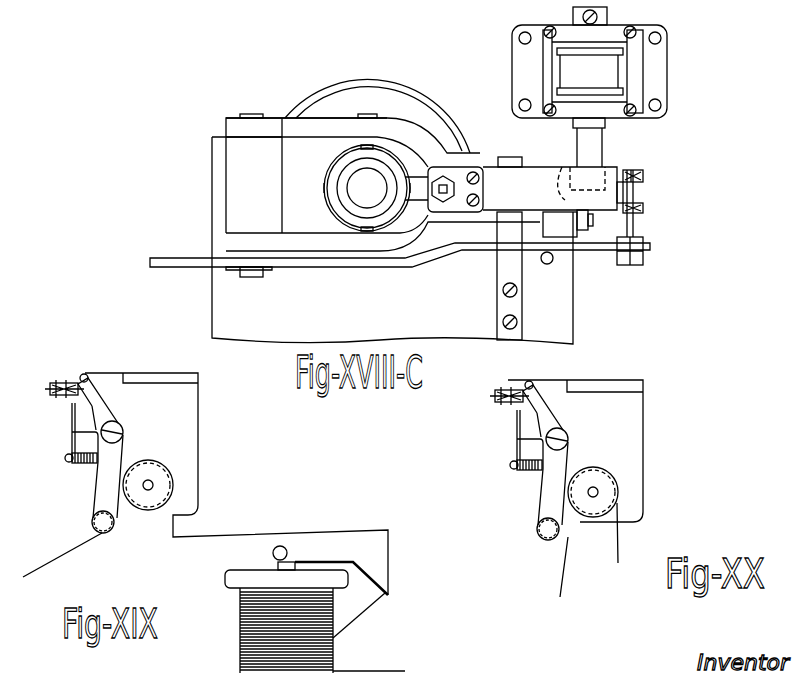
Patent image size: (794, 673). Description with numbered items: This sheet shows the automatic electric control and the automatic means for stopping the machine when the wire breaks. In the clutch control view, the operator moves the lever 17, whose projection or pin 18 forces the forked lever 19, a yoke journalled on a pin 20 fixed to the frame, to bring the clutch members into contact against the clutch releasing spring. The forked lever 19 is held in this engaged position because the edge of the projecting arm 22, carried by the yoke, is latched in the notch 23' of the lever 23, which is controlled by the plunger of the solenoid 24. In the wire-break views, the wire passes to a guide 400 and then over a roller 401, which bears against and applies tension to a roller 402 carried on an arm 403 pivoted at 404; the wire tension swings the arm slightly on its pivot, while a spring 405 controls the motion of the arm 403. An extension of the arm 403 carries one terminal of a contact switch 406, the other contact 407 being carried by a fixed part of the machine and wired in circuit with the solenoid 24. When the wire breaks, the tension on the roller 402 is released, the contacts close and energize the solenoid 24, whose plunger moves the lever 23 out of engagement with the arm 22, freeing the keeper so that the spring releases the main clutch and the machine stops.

In FIG. 18C, the lever 17 is at (328, 262).
In FIG. 18C, the pin 18 is at (637, 225).
In FIG. 18C, the forked lever 19 is at (277, 125).
In FIG. 18C, the pin 20 is at (250, 112).
In FIG. 18C, the projecting member 22 is at (613, 172).
In FIG. 18C, the lever 23 is at (607, 257).
In FIG. 18C, the notch 23' is at (572, 173).
In FIG. 18C, the solenoid 24 is at (660, 75).
In FIG. 19, the guide 400 is at (387, 597).
In FIG. 19, the roller 401 is at (163, 480).
In FIG. 19, the roller 402 is at (110, 533).
In FIG. 19, the arm 403 is at (110, 463).
In FIG. 19, the pivot 404 is at (117, 427).
In FIG. 20, the spring 405 is at (528, 470).
In FIG. 19, the contact switch terminal 406 is at (85, 375).
In FIG. 19, the contact 407 is at (82, 375).